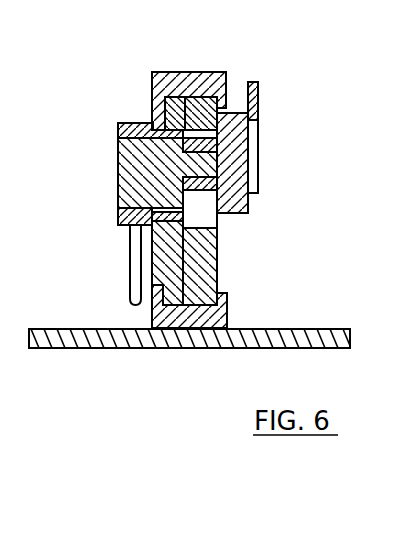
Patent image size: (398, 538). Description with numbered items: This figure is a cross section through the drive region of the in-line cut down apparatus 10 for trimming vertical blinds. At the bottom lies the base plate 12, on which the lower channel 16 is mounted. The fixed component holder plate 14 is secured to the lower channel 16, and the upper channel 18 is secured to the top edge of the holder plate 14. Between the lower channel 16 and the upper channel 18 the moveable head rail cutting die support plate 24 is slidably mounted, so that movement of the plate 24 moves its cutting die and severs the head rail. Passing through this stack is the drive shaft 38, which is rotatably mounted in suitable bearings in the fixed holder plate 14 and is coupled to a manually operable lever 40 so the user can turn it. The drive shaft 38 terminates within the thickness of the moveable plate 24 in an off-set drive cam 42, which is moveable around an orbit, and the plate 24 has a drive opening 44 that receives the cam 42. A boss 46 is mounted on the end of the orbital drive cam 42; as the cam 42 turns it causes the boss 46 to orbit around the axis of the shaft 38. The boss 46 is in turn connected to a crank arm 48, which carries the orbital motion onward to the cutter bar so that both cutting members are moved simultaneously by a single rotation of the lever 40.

The in-line cut down apparatus 10 is at (296, 131).
The base plate 12 is at (68, 348).
The fixed component holder plate 14 is at (157, 256).
The lower channel 16 is at (212, 316).
The upper channel 18 is at (182, 72).
The moveable head rail cutting die support plate 24 is at (210, 266).
The drive shaft 38 is at (125, 165).
The manually operable lever 40 is at (135, 278).
The off-set drive cam 42 is at (208, 163).
The drive opening 44 is at (202, 220).
The boss 46 is at (237, 112).
The crank arm 48 is at (260, 105).